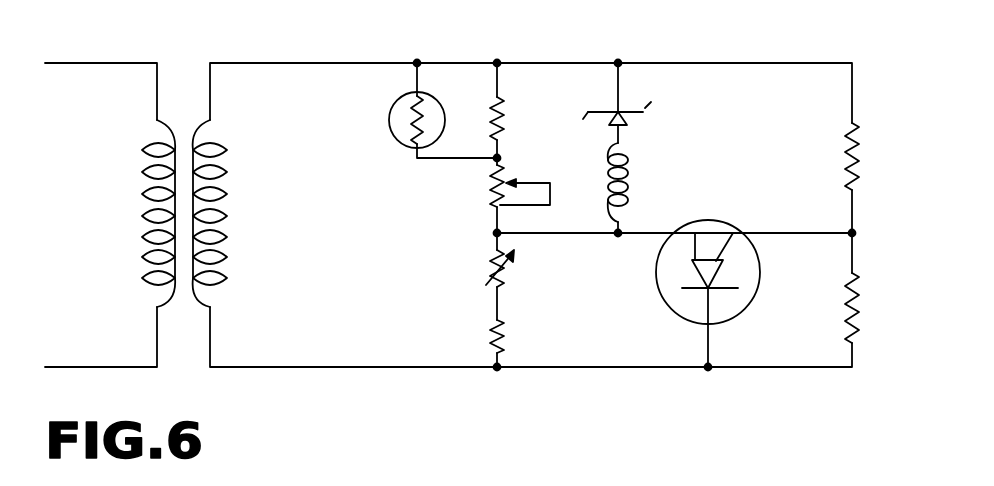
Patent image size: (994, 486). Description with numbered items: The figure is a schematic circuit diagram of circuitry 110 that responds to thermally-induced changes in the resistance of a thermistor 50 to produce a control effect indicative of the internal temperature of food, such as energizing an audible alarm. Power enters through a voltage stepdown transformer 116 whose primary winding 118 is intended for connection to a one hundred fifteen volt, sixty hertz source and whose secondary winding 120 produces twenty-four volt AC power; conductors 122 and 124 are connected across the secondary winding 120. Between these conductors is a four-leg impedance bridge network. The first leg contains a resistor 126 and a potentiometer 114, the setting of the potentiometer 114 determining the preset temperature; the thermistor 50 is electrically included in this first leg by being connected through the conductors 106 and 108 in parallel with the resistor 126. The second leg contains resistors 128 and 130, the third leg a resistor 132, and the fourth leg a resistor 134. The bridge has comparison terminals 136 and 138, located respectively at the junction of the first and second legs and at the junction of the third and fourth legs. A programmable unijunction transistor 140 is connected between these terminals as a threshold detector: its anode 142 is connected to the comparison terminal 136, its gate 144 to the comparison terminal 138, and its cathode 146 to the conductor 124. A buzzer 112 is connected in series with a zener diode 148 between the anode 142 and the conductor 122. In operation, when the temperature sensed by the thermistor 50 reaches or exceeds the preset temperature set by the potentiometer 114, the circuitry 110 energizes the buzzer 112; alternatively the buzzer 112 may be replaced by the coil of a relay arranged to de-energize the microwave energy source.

The thermistor 50 is at (408, 110).
The conductor 106 is at (406, 113).
The conductor 108 is at (446, 158).
The circuitry 110 is at (292, 43).
The buzzer 112 is at (628, 172).
The potentiometer 114 is at (492, 196).
The voltage stepdown transformer 116 is at (175, 165).
The primary winding 118 is at (144, 177).
The secondary winding 120 is at (224, 232).
The conductor 122 is at (313, 63).
The conductor 124 is at (352, 367).
The resistor 126 is at (502, 122).
The resistor 128 is at (505, 276).
The resistor 130 is at (494, 345).
The resistor 132 is at (850, 162).
The resistor 134 is at (850, 326).
The comparison terminal 136 is at (494, 236).
The comparison terminal 138 is at (852, 235).
The programmable unijunction transistor 140 is at (692, 293).
The anode 142 is at (646, 233).
The gate 144 is at (778, 233).
The cathode 146 is at (712, 352).
The zener diode 148 is at (634, 118).